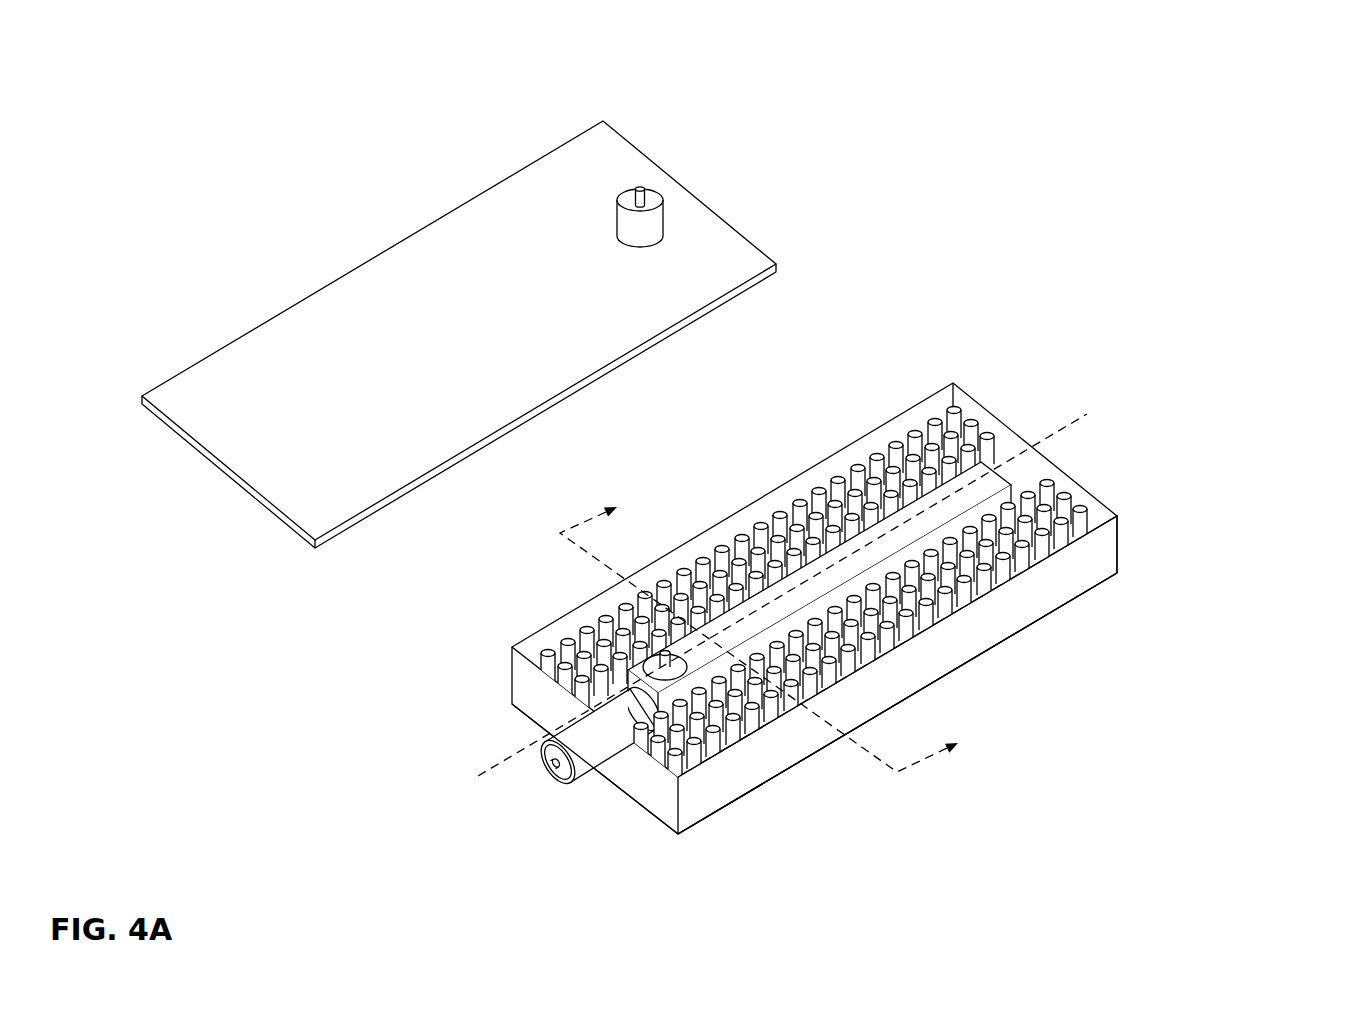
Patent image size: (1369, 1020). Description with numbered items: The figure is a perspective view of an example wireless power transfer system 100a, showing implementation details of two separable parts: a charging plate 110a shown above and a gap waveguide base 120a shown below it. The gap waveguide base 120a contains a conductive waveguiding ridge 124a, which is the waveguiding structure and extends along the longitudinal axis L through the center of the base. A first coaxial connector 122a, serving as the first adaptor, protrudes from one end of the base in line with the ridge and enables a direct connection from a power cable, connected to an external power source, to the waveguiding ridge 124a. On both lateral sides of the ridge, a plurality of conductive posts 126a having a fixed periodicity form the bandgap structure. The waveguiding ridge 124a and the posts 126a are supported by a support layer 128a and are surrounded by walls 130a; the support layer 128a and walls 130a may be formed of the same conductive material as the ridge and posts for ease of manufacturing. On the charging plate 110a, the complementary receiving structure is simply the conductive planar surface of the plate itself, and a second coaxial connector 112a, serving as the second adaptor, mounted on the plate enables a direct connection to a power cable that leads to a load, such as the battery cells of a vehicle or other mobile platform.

The WPT system 100a is at (1184, 117).
The charging plate 110a is at (482, 342).
The second coaxial connector 112a is at (664, 201).
The gap waveguide base 120a is at (794, 640).
The first coaxial connector 122a is at (560, 783).
The conductive waveguiding ridge 124a is at (876, 512).
The conductive posts 126a is at (791, 625).
The support layer 128a is at (743, 797).
The walls 130a is at (1098, 566).